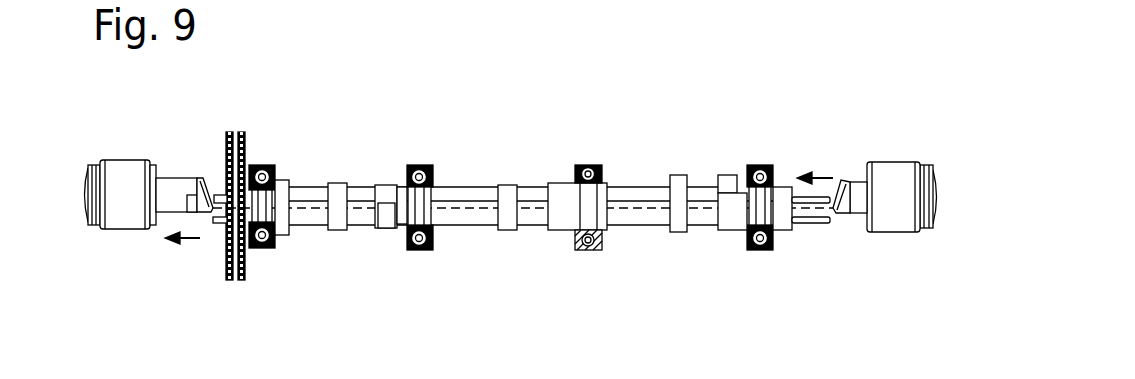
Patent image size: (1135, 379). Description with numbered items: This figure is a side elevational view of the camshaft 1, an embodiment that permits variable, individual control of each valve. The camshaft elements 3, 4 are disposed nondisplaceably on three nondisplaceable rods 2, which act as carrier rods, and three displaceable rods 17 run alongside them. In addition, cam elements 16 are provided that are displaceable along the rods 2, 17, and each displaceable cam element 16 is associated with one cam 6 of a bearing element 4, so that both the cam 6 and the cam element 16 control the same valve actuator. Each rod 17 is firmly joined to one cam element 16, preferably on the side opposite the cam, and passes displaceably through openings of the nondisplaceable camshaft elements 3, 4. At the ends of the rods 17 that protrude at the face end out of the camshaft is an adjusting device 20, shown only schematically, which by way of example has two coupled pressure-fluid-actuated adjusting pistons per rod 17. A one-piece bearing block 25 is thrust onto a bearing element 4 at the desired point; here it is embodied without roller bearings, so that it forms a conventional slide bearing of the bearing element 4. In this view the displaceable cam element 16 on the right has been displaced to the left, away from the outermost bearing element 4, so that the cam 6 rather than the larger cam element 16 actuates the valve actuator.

The camshaft 1 is at (350, 150).
The nondisplaceable rods 2 is at (484, 196).
The camshaft element 3 is at (246, 134).
The bearing element 4 is at (560, 224).
The cam 6 is at (384, 229).
The displaceable cam element 16 is at (336, 230).
The displaceable rods 17 is at (220, 226).
The adjusting device 20 is at (143, 228).
The one-piece bearing block 25 is at (421, 165).